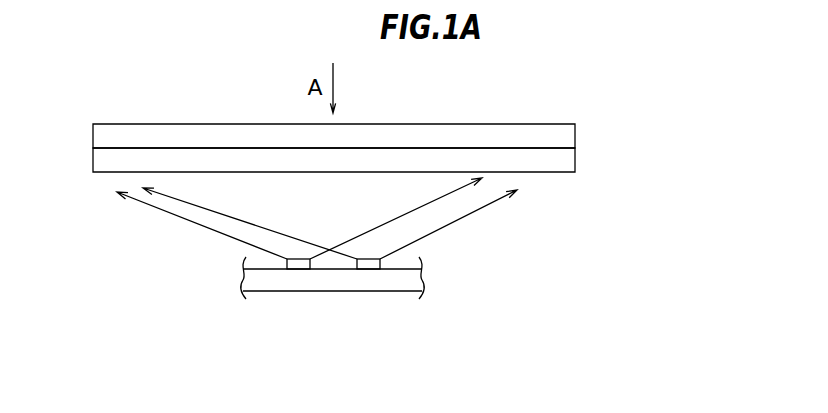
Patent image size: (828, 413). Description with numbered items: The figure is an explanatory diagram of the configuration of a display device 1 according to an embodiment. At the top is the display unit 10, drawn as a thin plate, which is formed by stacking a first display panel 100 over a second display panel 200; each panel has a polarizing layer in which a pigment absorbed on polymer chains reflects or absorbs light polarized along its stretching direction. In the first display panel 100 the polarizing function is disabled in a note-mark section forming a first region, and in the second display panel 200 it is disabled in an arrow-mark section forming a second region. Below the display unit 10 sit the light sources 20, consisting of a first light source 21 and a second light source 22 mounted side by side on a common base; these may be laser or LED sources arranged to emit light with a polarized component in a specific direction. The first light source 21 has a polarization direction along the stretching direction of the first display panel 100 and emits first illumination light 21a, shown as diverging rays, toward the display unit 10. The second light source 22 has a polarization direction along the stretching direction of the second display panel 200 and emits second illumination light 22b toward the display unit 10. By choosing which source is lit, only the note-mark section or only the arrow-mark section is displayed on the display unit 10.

The display device 1 is at (559, 92).
The display unit 10 is at (655, 110).
The first display panel 100 is at (578, 137).
The second display panel 200 is at (578, 163).
The light sources 20 is at (425, 346).
The first light source 21 is at (300, 268).
The second light source 22 is at (372, 268).
The first illumination light 21a is at (370, 228).
The light emitted from second light emitting element 22b is at (465, 216).